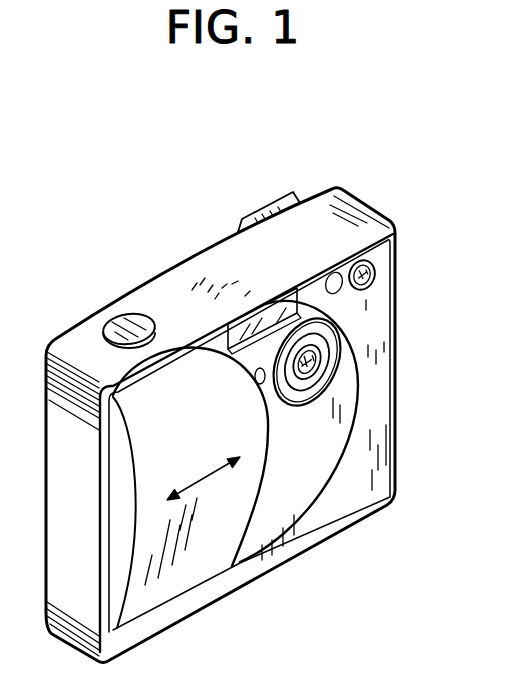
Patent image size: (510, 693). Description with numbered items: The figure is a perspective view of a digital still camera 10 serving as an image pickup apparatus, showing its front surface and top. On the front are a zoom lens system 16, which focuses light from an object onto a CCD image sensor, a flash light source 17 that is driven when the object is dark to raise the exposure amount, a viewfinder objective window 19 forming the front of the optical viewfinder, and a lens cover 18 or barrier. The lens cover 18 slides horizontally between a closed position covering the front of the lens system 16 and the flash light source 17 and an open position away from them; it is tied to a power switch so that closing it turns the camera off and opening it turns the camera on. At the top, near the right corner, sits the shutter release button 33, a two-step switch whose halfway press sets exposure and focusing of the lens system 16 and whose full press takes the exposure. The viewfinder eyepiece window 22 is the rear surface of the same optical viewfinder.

The digital still camera 10 is at (163, 196).
The zoom lens system 16 is at (318, 359).
The flash light source 17 is at (260, 330).
The lens cover 18 is at (246, 432).
The viewfinder objective window 19 is at (375, 275).
The viewfinder eyepiece window 22 is at (266, 199).
The shutter release button 33 is at (132, 326).